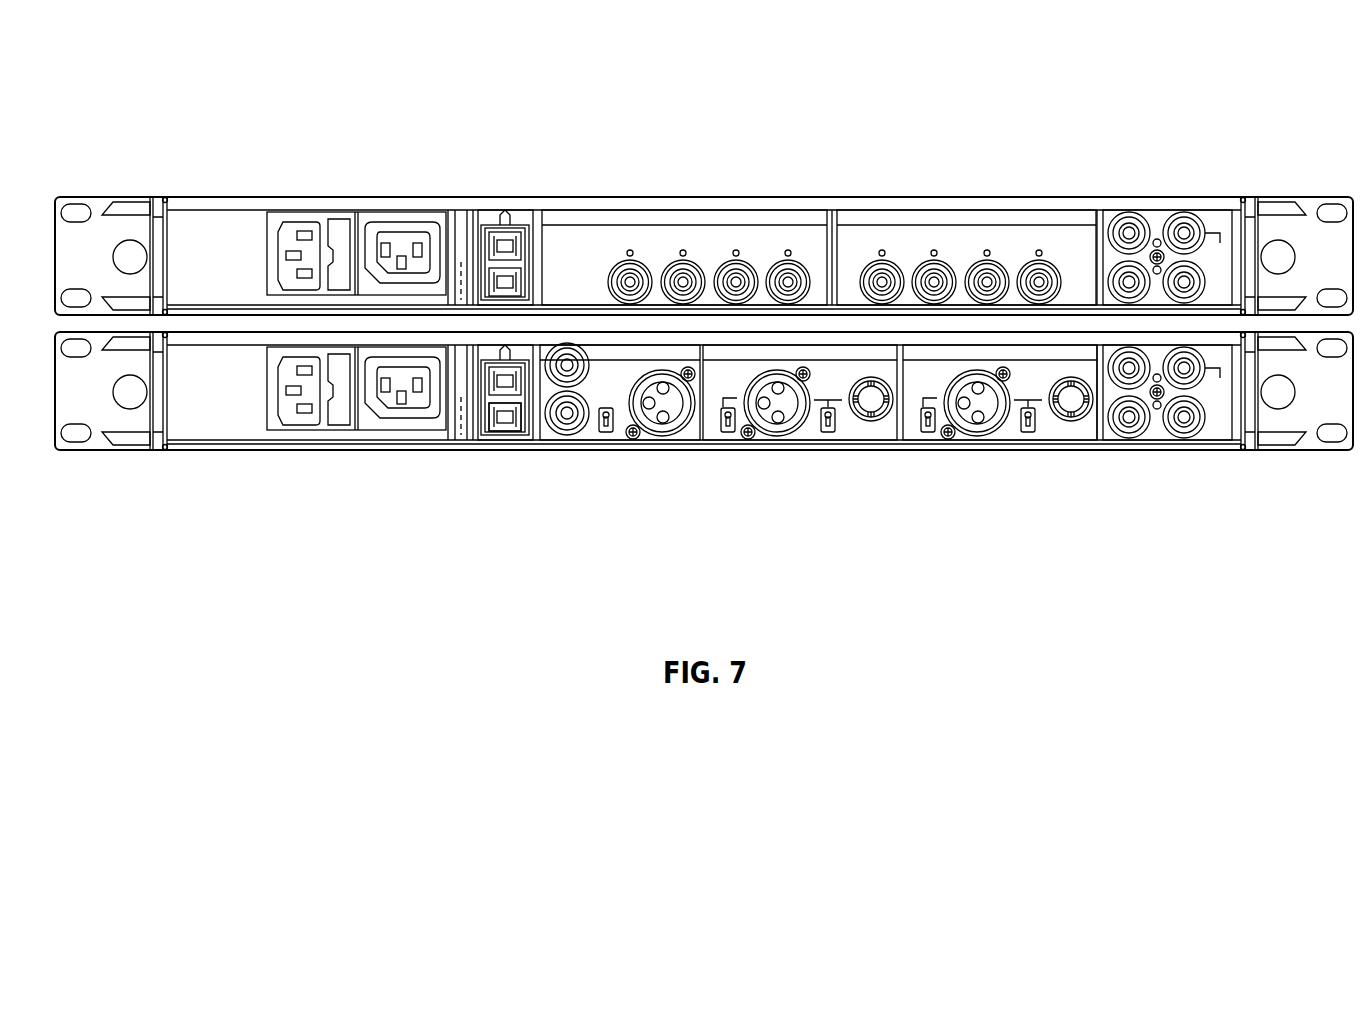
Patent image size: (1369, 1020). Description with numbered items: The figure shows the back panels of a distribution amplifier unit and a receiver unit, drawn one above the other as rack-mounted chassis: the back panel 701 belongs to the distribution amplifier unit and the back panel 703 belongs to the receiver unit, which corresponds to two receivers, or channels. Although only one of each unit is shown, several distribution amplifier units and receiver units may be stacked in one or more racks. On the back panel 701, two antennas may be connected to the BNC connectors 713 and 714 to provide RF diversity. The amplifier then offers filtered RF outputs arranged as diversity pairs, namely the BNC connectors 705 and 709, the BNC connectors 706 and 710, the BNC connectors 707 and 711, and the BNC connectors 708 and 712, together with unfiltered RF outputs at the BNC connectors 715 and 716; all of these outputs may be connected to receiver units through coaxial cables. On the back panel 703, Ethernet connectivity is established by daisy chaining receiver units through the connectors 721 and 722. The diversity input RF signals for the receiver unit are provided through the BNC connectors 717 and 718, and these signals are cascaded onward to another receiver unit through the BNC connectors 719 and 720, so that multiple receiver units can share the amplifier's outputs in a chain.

The back panel 701 is at (252, 197).
The back panel 703 is at (237, 455).
The BNC connector 705 is at (628, 261).
The BNC connector 706 is at (682, 261).
The BNC connector 707 is at (735, 261).
The BNC connector 708 is at (787, 261).
The BNC connector 709 is at (881, 261).
The BNC connector 710 is at (934, 261).
The BNC connector 711 is at (987, 261).
The BNC connector 712 is at (1039, 261).
The BNC connector 713 is at (1140, 214).
The BNC connector 714 is at (1203, 214).
The BNC connector 715 is at (1107, 282).
The BNC connector 716 is at (1204, 272).
The BNC connector 717 is at (1110, 386).
The BNC connector 718 is at (1203, 384).
The BNC connector 719 is at (1140, 438).
The BNC connector 720 is at (1200, 437).
The connector 721 is at (481, 385).
The connector 722 is at (510, 438).